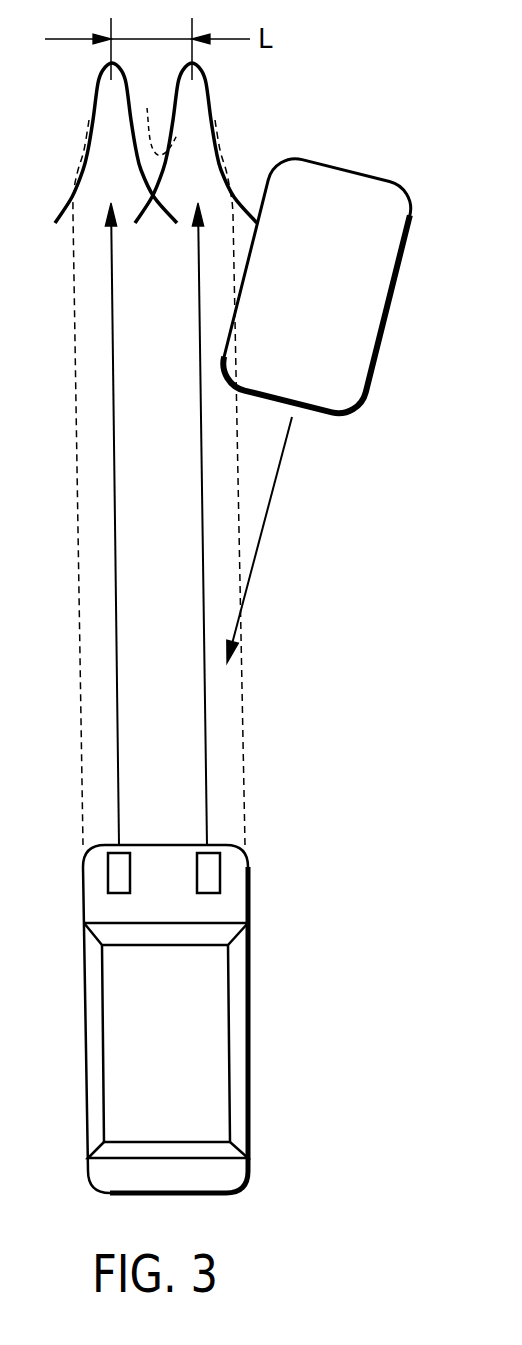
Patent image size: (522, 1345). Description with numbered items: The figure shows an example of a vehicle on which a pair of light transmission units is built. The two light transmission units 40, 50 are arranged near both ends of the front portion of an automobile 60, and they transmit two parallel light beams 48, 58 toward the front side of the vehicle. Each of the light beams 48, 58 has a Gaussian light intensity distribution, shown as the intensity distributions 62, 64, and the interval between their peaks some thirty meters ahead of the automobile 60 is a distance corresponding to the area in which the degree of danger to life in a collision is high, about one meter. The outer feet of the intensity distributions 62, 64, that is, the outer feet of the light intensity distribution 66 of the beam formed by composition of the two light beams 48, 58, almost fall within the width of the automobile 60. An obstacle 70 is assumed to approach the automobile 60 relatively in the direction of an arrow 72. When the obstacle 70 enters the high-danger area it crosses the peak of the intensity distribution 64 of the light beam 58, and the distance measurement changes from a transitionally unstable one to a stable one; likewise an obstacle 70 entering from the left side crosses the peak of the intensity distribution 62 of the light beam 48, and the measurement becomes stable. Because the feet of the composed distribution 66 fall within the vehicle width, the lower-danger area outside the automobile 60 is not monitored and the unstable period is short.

The light transmission unit 40 is at (118, 871).
The light transmission unit 50 is at (213, 868).
The automobile 60 is at (248, 910).
The light intensity distribution 62 is at (90, 150).
The light intensity distribution 64 is at (217, 133).
The light intensity distribution of composed light beam 66 is at (157, 119).
The obstacle 70 is at (397, 308).
The arrow 72 is at (267, 518).
The light beam 48 is at (117, 711).
The light beam 58 is at (205, 708).